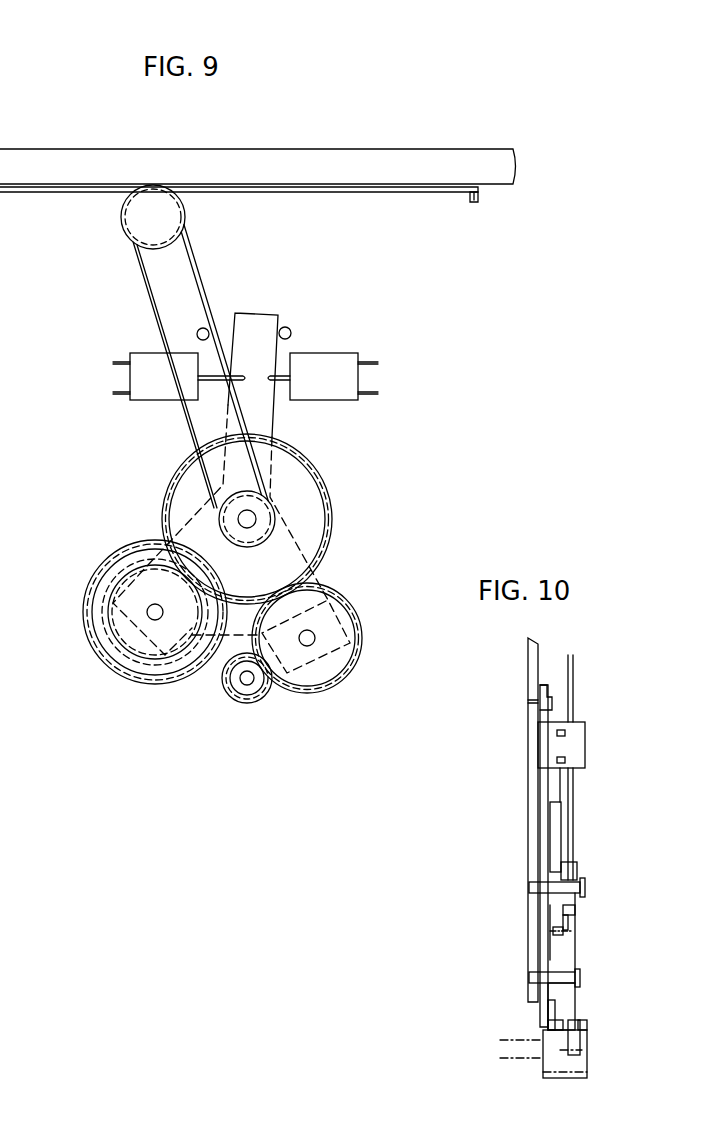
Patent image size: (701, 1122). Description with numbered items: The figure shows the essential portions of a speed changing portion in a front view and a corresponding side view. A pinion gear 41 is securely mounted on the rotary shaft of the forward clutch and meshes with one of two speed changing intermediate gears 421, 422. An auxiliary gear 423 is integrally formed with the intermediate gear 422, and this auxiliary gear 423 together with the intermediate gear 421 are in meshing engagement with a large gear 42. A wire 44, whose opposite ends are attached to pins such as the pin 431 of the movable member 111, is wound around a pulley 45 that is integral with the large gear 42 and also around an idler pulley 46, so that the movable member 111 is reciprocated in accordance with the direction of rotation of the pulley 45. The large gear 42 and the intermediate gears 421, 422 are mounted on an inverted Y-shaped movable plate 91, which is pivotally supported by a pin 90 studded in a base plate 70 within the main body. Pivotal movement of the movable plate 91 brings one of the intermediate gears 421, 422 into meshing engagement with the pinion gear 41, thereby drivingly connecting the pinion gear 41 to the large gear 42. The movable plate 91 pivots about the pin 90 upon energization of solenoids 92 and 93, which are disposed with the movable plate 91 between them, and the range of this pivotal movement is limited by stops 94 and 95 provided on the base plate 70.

In FIG. 9, the movable member 111 is at (318, 176).
In FIG. 9, the pin 431 is at (474, 204).
In FIG. 9, the idler pulley 46 is at (136, 229).
In FIG. 9, the wire 44 is at (192, 238).
In FIG. 10, the wire 44 is at (574, 683).
In FIG. 9, the movable plate 91 is at (255, 418).
In FIG. 10, the movable plate 91 is at (543, 936).
In FIG. 9, the stop 95 is at (207, 328).
In FIG. 10, the stop 95 is at (541, 704).
In FIG. 9, the stop 94 is at (285, 327).
In FIG. 9, the solenoid 93 is at (148, 370).
In FIG. 10, the solenoid 93 is at (575, 742).
In FIG. 9, the solenoid 92 is at (331, 368).
In FIG. 9, the large gear 42 is at (322, 504).
In FIG. 10, the large gear 42 is at (556, 808).
In FIG. 9, the pulley 45 is at (259, 508).
In FIG. 10, the pulley 45 is at (572, 872).
In FIG. 9, the pin 90 is at (247, 528).
In FIG. 10, the pin 90 is at (586, 888).
In FIG. 9, the speed changing intermediate gear 422 is at (141, 668).
In FIG. 10, the speed changing intermediate gear 422 is at (566, 1008).
In FIG. 9, the auxiliary gear 423 is at (118, 650).
In FIG. 9, the speed changing intermediate gear 421 is at (336, 607).
In FIG. 9, the pinion gear 41 is at (247, 703).
In FIG. 10, the pinion gear 41 is at (580, 1058).
In FIG. 10, the base plate 70 is at (531, 849).